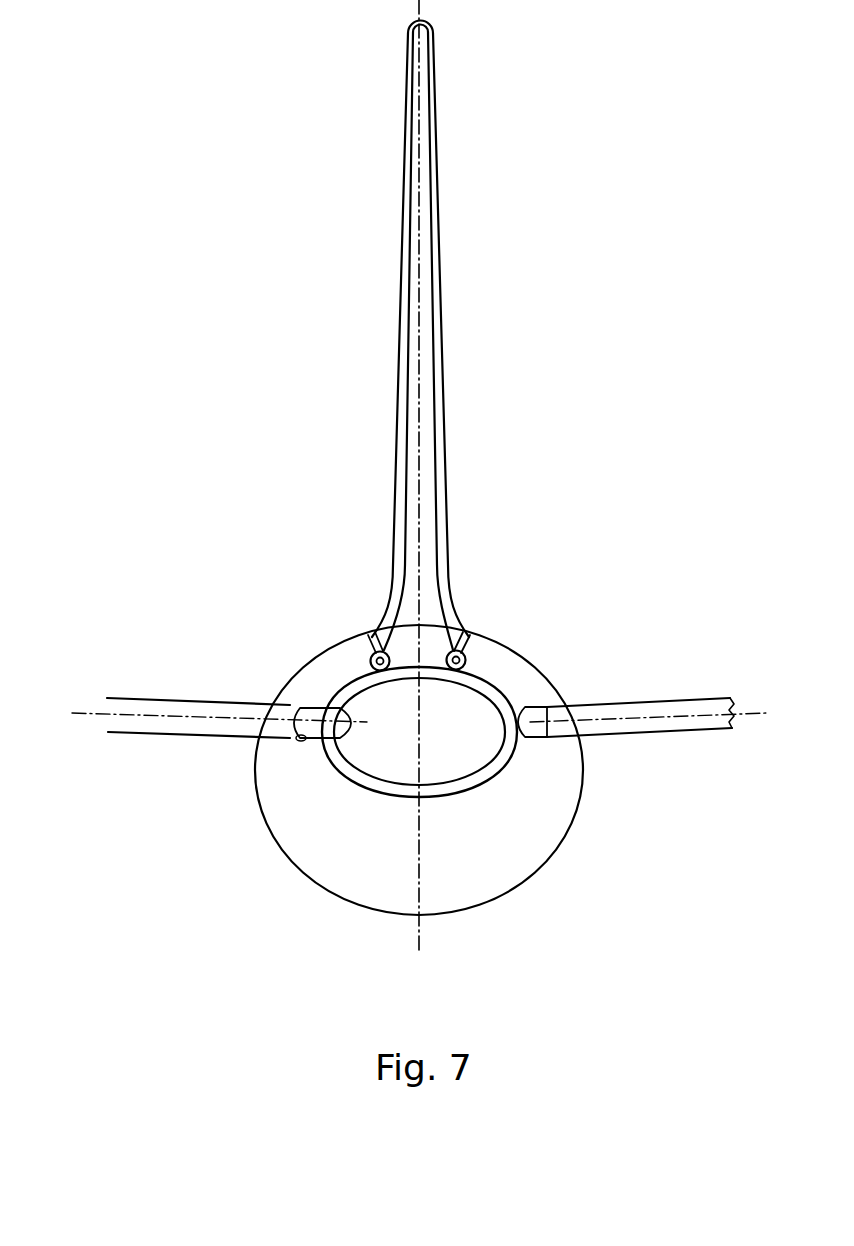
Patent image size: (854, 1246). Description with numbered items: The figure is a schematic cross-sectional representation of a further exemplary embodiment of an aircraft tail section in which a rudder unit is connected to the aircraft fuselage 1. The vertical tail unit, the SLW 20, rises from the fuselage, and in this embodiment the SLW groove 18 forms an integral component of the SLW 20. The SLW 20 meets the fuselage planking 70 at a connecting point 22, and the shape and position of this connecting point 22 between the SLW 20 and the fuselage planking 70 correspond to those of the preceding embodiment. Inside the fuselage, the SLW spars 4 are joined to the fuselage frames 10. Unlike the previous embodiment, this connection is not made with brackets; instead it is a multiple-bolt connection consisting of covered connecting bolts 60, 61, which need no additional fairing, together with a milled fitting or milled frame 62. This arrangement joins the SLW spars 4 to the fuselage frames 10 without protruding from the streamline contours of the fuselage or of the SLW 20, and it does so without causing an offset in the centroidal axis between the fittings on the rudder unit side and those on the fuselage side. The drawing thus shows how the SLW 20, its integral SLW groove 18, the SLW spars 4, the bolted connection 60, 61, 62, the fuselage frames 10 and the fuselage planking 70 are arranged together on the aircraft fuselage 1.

The aircraft fuselage 1 is at (530, 843).
The SLW spar 4 is at (418, 292).
The fuselage frame 10 is at (350, 780).
The SLW groove 18 is at (452, 613).
The SLW 20 is at (442, 263).
The connecting point 22 is at (372, 636).
The covered connecting bolt 60 is at (468, 655).
The covered connecting bolt 61 is at (358, 658).
The milled fitting or milled frame 62 is at (347, 675).
The fuselage planking 70 is at (562, 692).